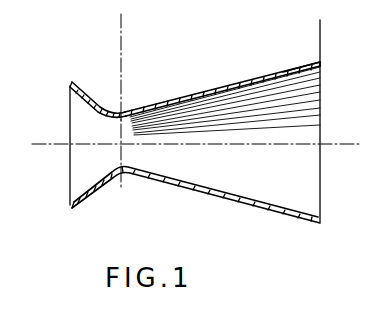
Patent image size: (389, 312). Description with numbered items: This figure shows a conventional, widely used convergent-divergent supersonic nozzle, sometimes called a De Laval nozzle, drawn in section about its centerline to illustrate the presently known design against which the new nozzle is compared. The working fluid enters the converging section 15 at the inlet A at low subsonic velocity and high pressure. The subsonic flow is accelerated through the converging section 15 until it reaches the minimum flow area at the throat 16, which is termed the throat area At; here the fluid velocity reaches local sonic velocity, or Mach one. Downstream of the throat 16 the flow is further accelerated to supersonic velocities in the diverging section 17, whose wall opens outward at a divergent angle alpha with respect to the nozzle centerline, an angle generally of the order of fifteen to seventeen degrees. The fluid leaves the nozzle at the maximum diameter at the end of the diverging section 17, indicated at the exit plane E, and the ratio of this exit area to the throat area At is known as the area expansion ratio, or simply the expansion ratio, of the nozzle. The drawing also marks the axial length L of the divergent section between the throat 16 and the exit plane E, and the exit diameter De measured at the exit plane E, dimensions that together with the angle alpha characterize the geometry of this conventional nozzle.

The converging section 15 is at (84, 92).
The throat 16 is at (163, 103).
The diverging section 17 is at (283, 69).
The inlet A is at (60, 133).
The throat area At is at (121, 121).
The nozzle length L is at (320, 33).
The divergent angle alpha is at (320, 62).
The exit diameter De is at (357, 67).
The exit E is at (320, 176).